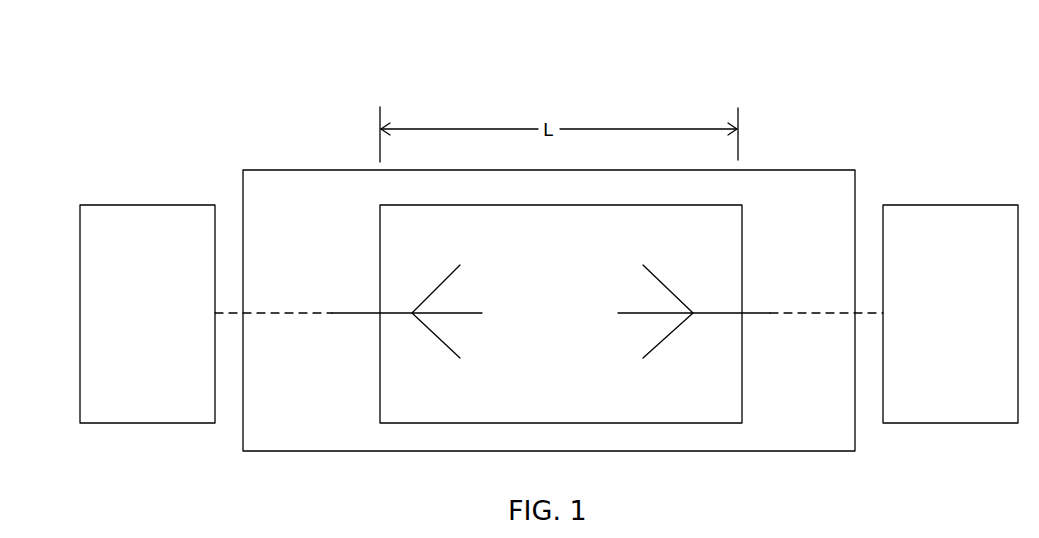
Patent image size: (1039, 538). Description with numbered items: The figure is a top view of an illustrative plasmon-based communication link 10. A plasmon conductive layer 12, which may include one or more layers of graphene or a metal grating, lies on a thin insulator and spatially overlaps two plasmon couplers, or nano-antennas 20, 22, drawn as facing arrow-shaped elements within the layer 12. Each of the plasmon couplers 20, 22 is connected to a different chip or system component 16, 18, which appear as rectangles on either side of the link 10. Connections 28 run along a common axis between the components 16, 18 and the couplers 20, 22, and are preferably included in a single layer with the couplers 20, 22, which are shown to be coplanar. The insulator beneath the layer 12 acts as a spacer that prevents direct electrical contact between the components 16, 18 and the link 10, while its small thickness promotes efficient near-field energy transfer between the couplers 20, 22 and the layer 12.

The plasmon-based communication link 10 is at (796, 126).
The plasmon conductive layer 12 is at (585, 423).
The chip or system component 16 is at (157, 205).
The chip or system component 18 is at (923, 205).
The plasmon coupler 20 is at (398, 312).
The plasmon coupler 22 is at (720, 312).
The connections 28 is at (295, 313).